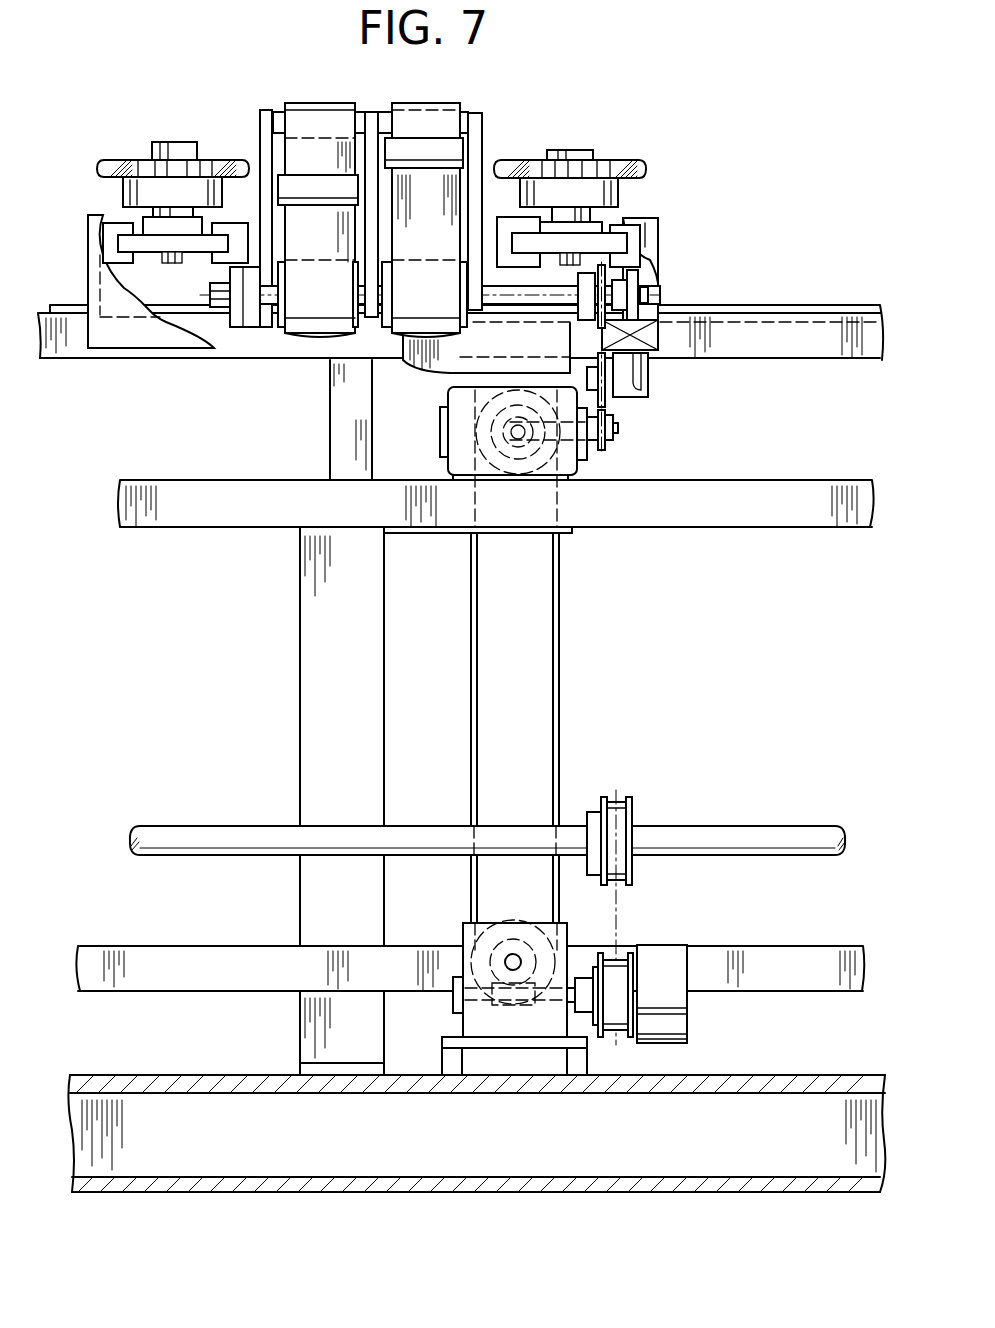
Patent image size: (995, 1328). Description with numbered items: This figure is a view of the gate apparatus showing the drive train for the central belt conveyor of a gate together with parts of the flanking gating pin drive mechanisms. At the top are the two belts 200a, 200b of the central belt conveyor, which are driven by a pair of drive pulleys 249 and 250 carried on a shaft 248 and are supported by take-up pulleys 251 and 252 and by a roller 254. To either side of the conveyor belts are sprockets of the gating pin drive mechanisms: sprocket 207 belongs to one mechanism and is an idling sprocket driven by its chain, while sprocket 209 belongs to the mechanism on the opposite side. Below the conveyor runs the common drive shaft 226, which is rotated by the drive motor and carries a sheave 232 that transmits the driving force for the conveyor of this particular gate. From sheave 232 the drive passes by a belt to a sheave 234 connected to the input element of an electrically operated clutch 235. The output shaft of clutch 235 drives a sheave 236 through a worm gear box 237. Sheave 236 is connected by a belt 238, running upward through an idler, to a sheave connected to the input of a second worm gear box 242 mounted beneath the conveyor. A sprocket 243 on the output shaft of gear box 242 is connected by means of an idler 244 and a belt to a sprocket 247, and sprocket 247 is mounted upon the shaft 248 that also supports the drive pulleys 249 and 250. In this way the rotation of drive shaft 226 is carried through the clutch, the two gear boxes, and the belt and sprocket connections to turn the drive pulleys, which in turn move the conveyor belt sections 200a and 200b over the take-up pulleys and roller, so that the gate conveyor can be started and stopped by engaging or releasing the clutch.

The sprocket 209 is at (136, 160).
The take-up pulley 251 is at (292, 185).
The roller 254 is at (358, 112).
The take-up pulley 252 is at (467, 150).
The sprocket 207 is at (605, 158).
The shaft 248 is at (566, 282).
The drive pulley 250 is at (465, 334).
The drive pulley 249 is at (272, 330).
The belt 200b is at (310, 337).
The belt 200a is at (400, 338).
The sprocket 247 is at (652, 355).
The idler 244 is at (607, 397).
The sprocket 243 is at (612, 448).
The worm gear box 242 is at (465, 443).
The belt 238 is at (562, 696).
The sheave 232 is at (618, 799).
The drive shaft 226 is at (765, 852).
The sheave 236 is at (533, 922).
The worm gear box 237 is at (487, 951).
The electrically operated clutch 235 is at (673, 1010).
The sheave 234 is at (610, 1035).